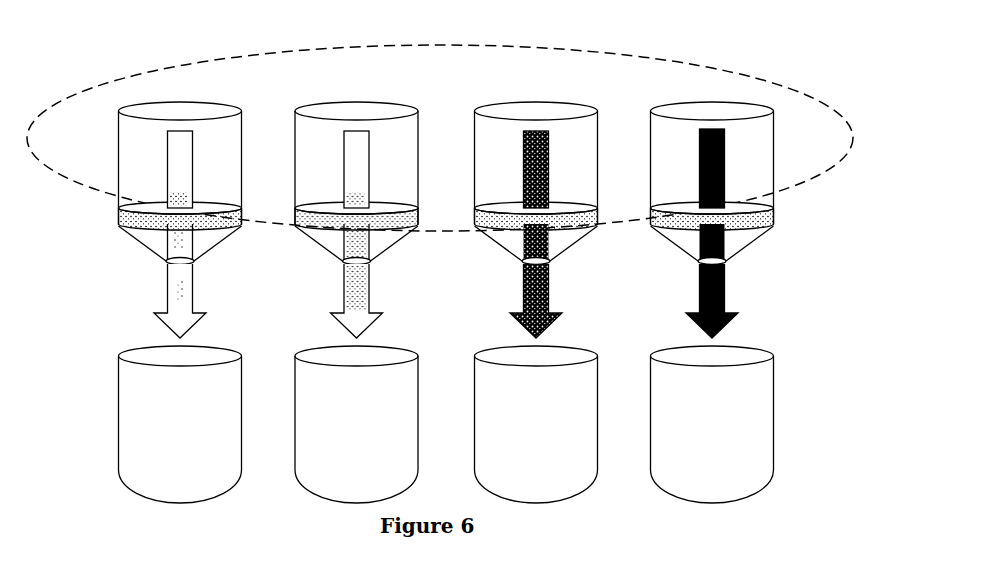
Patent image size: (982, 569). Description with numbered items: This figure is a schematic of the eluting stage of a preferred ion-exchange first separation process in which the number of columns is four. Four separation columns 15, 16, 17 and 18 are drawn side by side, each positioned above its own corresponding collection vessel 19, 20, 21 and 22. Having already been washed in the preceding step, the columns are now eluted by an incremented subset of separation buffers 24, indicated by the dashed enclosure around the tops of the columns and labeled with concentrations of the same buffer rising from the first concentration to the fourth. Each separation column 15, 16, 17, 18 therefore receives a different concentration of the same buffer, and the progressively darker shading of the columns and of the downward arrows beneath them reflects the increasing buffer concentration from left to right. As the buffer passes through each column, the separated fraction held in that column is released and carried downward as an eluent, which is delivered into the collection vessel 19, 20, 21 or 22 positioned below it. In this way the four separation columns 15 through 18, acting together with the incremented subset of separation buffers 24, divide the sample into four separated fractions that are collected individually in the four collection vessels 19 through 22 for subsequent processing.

The separation column 15 is at (163, 205).
The separation column 16 is at (340, 205).
The separation column 17 is at (519, 205).
The separation column 18 is at (695, 205).
The collection vessel 19 is at (154, 426).
The collection vessel 20 is at (331, 426).
The collection vessel 21 is at (510, 426).
The collection vessel 22 is at (686, 426).
The incremented subset of separation buffers 24 is at (783, 188).